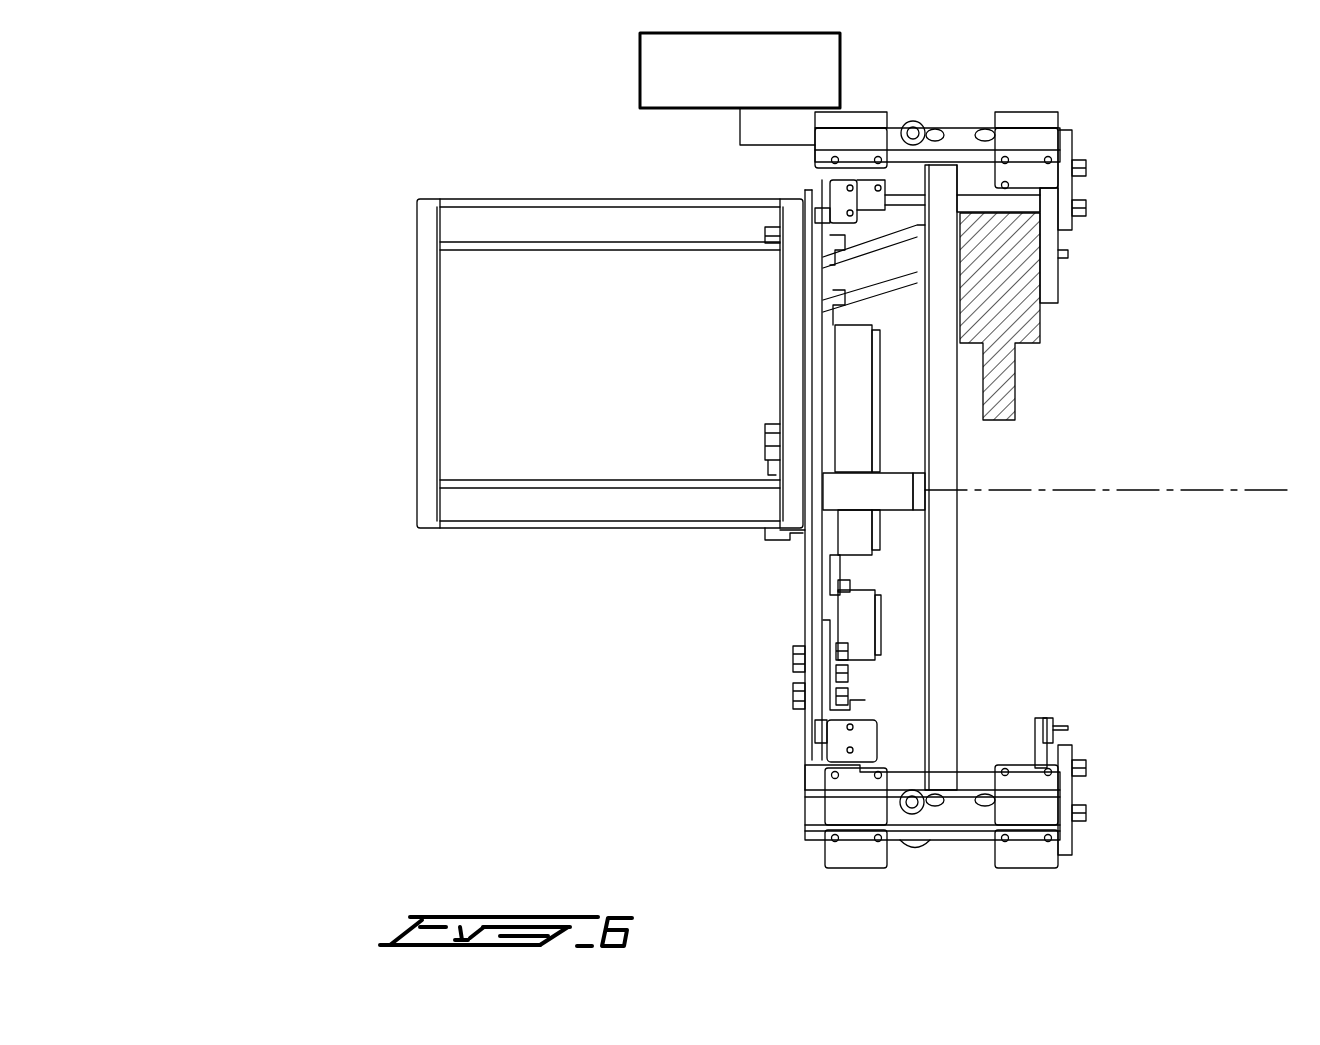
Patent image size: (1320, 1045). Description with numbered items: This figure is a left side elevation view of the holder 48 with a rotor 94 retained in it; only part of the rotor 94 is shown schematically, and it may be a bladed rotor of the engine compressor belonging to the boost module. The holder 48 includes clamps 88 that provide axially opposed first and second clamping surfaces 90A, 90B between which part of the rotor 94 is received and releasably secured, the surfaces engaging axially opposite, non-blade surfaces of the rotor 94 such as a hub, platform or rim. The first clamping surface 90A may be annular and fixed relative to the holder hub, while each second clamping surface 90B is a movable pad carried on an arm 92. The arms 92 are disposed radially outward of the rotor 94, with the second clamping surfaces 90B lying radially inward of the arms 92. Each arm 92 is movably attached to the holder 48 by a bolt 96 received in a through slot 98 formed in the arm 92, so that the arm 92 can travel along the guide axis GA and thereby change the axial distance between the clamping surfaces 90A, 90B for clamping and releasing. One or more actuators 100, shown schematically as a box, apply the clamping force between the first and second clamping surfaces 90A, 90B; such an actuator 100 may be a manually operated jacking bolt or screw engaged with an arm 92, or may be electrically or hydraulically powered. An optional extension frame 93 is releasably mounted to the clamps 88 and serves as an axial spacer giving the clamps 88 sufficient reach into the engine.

The holder 48 is at (375, 85).
The actuator 100 is at (640, 75).
The extension frame 93 is at (616, 505).
The first clamping surface 90A is at (958, 518).
The second clamping surface 90B is at (1045, 232).
The clamp 88 is at (959, 490).
The arm 92 is at (968, 140).
The rotor 94 is at (1025, 292).
The bolt 96 is at (908, 122).
The through slot 98 is at (935, 128).
The guide axis GA is at (1272, 488).